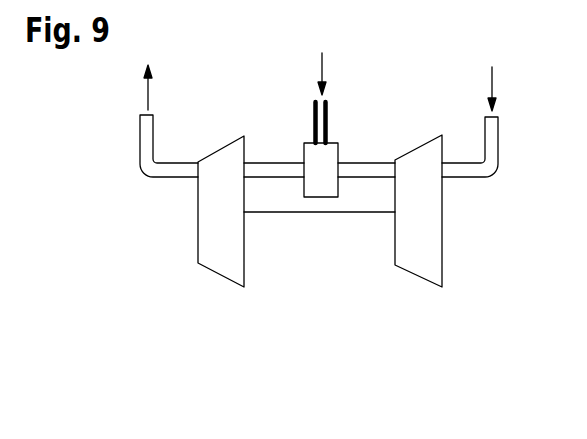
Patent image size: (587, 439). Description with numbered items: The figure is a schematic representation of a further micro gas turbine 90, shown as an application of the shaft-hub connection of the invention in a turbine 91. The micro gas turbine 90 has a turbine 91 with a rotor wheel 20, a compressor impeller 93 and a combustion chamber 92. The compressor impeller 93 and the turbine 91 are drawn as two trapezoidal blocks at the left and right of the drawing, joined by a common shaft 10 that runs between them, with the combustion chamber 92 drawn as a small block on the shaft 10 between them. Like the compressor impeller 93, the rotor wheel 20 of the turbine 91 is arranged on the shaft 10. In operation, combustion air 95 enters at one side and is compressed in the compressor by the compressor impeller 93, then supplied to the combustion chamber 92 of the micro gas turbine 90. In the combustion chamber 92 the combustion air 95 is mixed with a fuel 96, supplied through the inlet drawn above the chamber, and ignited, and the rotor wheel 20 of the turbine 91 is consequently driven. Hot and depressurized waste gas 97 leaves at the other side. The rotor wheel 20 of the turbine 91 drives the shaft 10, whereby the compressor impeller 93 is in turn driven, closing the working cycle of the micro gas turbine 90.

The micro gas turbine 90 is at (321, 235).
The rotor wheel 20 is at (205, 232).
The turbine 91 is at (212, 273).
The compressor impeller 93 is at (407, 270).
The shaft 10 is at (333, 212).
The combustion chamber 92 is at (338, 150).
The combustion air 95 is at (492, 80).
The fuel 96 is at (322, 68).
The waste gas 97 is at (148, 95).